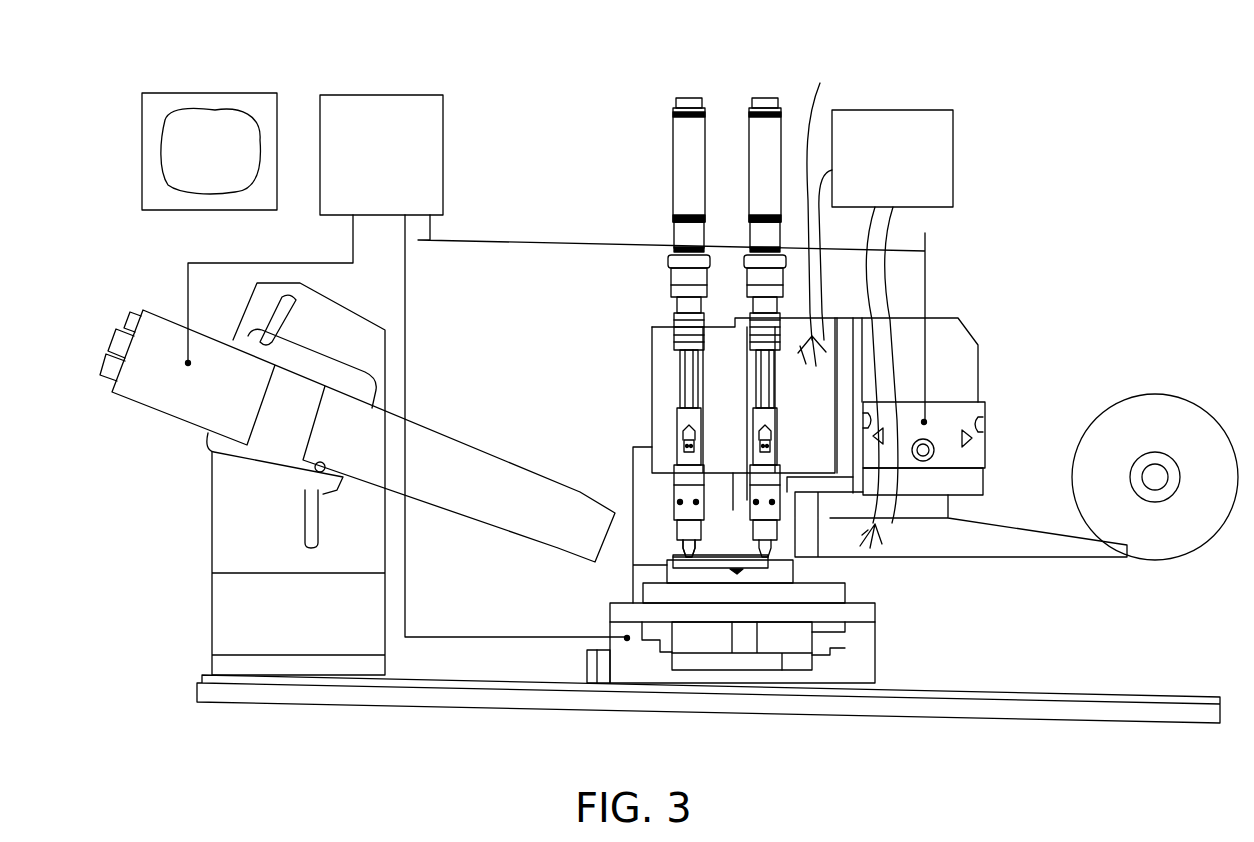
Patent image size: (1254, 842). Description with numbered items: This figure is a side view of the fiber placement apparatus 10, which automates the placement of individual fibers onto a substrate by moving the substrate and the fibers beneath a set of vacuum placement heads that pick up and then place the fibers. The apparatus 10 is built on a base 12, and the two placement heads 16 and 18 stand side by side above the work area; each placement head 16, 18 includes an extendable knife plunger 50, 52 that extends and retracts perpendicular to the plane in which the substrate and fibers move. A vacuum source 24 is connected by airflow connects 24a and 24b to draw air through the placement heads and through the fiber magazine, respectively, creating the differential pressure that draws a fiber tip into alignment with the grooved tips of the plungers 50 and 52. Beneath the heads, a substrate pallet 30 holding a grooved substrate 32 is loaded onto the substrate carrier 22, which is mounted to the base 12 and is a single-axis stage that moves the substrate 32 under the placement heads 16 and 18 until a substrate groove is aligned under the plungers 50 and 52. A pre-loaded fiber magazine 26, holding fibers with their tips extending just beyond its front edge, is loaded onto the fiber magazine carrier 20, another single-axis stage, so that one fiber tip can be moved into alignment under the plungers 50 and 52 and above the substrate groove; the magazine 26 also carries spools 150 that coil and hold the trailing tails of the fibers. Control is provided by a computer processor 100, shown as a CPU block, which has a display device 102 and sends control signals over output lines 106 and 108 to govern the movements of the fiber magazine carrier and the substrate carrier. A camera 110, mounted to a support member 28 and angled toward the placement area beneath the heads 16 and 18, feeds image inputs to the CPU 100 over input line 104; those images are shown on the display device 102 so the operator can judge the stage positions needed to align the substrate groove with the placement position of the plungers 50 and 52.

The fiber placement apparatus 10 is at (1082, 200).
The base 12 is at (1092, 715).
The placement head 16 is at (691, 98).
The placement head 18 is at (766, 98).
The fiber magazine carrier 20 is at (990, 400).
The substrate carrier 22 is at (876, 650).
The vacuum source 24 is at (953, 126).
The airflow connect 24a is at (820, 83).
The airflow connect 24b is at (888, 233).
The fiber magazine 26 is at (927, 543).
The support member 28 is at (220, 610).
The substrate pallet 30 is at (632, 568).
The grooved substrate 32 is at (753, 572).
The knife plunger 50 is at (672, 517).
The knife plunger 52 is at (793, 558).
The computer processor 100 is at (447, 138).
The display device 102 is at (160, 212).
The input line 104 is at (218, 258).
The output line 106 is at (487, 240).
The output line 108 is at (406, 300).
The camera 110 is at (172, 417).
The spool 150 is at (1175, 395).